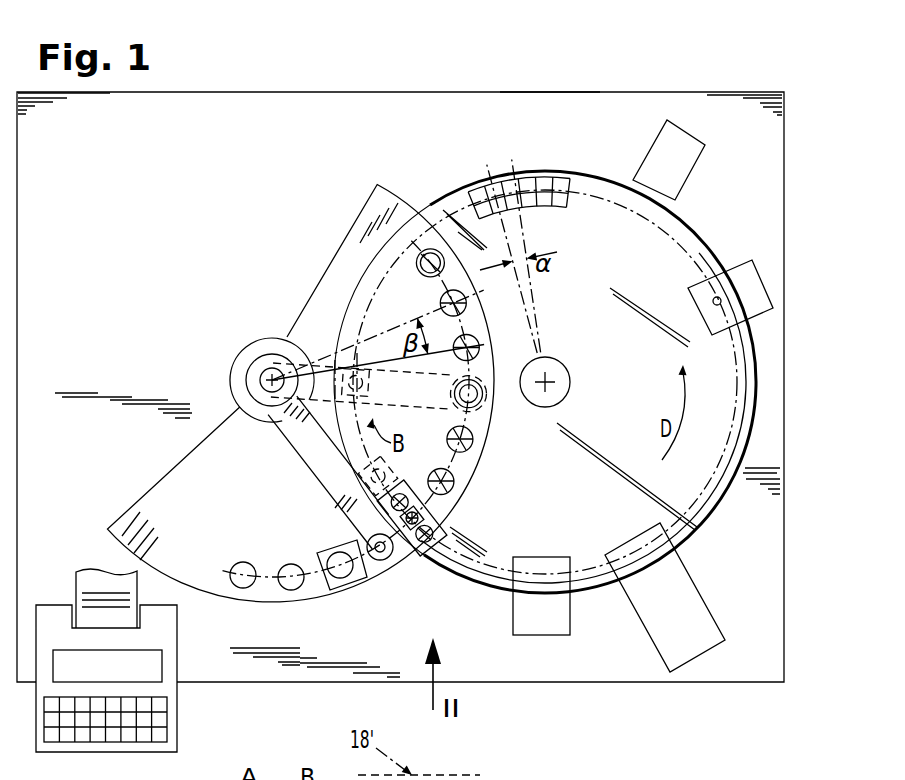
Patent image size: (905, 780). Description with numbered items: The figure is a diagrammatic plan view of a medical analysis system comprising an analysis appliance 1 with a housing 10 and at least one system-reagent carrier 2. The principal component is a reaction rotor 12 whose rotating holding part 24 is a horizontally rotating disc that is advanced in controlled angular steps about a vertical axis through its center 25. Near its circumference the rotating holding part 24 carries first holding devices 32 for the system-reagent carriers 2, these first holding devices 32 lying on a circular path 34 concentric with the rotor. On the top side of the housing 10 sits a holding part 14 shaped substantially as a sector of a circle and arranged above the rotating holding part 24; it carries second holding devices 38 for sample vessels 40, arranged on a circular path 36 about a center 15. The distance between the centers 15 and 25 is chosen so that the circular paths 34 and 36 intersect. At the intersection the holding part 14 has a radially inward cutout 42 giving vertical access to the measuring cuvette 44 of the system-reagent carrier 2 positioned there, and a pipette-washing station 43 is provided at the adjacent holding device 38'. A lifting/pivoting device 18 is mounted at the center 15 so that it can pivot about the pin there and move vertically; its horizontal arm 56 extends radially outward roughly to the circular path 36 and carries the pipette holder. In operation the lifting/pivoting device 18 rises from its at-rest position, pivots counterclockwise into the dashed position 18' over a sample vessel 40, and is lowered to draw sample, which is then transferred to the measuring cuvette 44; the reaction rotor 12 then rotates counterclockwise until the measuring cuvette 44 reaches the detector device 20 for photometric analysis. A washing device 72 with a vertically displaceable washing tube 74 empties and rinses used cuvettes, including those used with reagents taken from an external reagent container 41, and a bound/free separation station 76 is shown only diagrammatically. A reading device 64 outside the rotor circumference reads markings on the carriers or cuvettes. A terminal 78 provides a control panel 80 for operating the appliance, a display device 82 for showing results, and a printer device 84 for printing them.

The analysis appliance 1 is at (537, 90).
The housing 10 is at (279, 110).
The reaction rotor 12 is at (724, 497).
The holding part 14 is at (333, 262).
The center 15 is at (263, 367).
The lifting/pivoting device 18 is at (308, 451).
The pivoted position of the lifting/pivoting device 18' is at (394, 363).
The system-reagent carrier 2 is at (440, 552).
The detector device 20 is at (700, 614).
The rotating holding part 24 is at (717, 412).
The center 25 is at (552, 378).
The first holding devices 32 is at (545, 205).
The circular path 34 is at (590, 570).
The circular path 36 is at (176, 537).
The second holding devices 38 is at (243, 541).
The holding device 38' is at (293, 544).
The sample vessel 40 is at (485, 397).
The external reagent container 41 is at (430, 248).
The cutout 42 is at (433, 517).
The pipette-washing station 43 is at (333, 587).
The measuring cuvette 44 is at (407, 548).
The arm 56 is at (320, 460).
The reading device 64 is at (700, 148).
The washing device 72 is at (752, 262).
The washing tube 74 is at (713, 302).
The bound/free separation station 76 is at (557, 631).
The terminal 78 is at (168, 690).
The control panel 80 is at (140, 737).
The display device 82 is at (147, 650).
The printer device 84 is at (77, 585).